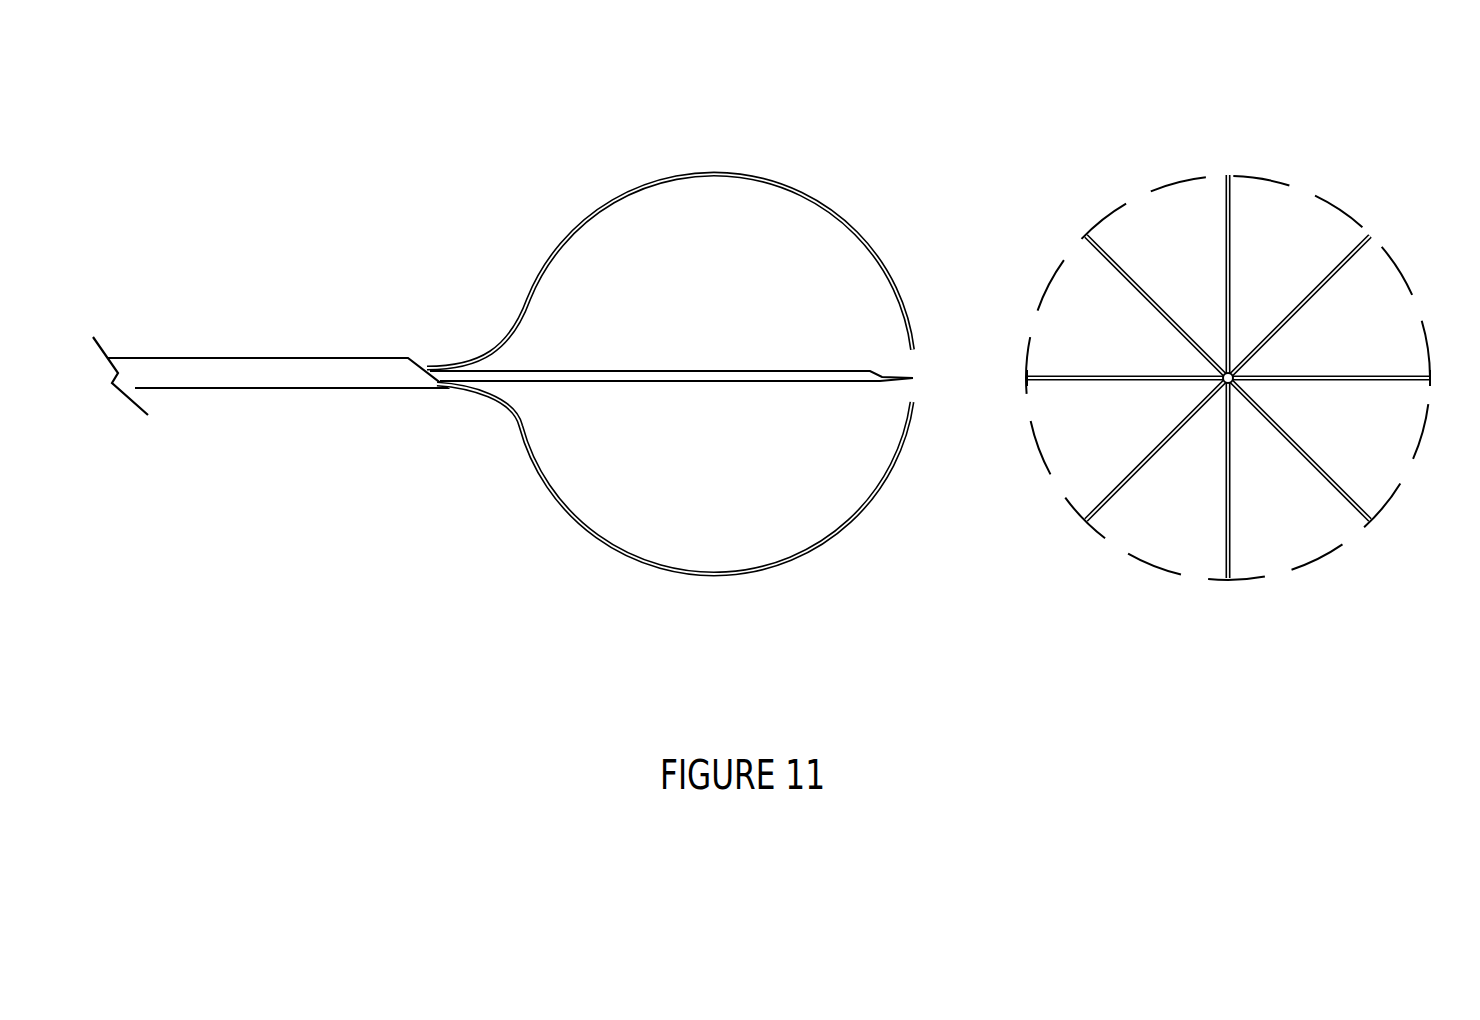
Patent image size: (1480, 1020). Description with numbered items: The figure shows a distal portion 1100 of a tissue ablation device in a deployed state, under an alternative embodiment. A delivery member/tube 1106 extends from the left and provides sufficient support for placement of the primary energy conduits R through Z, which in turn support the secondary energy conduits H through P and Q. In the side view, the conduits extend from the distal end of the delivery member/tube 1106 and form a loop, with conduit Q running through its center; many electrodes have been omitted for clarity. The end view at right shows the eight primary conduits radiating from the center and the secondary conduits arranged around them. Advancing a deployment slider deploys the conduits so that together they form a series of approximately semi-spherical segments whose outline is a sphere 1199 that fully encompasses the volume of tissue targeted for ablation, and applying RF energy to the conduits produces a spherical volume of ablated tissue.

The distal portion 1100 is at (915, 91).
The delivery member/tube 1106 is at (267, 350).
The sphere 1199 is at (1320, 173).